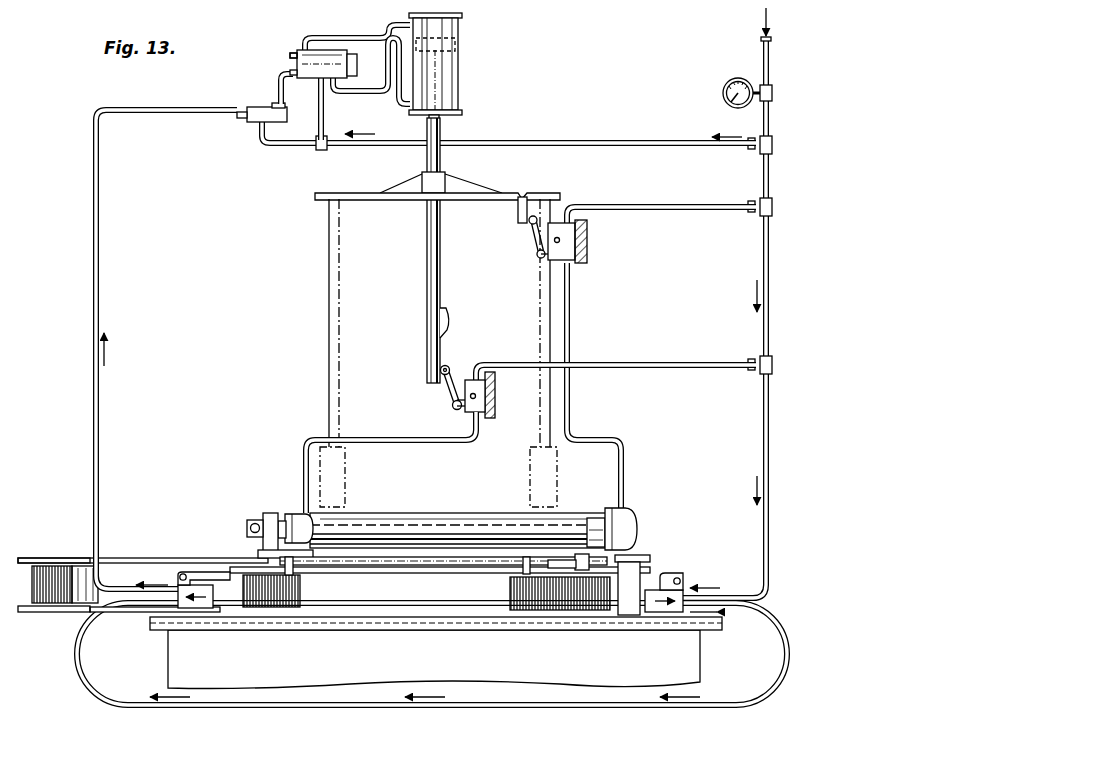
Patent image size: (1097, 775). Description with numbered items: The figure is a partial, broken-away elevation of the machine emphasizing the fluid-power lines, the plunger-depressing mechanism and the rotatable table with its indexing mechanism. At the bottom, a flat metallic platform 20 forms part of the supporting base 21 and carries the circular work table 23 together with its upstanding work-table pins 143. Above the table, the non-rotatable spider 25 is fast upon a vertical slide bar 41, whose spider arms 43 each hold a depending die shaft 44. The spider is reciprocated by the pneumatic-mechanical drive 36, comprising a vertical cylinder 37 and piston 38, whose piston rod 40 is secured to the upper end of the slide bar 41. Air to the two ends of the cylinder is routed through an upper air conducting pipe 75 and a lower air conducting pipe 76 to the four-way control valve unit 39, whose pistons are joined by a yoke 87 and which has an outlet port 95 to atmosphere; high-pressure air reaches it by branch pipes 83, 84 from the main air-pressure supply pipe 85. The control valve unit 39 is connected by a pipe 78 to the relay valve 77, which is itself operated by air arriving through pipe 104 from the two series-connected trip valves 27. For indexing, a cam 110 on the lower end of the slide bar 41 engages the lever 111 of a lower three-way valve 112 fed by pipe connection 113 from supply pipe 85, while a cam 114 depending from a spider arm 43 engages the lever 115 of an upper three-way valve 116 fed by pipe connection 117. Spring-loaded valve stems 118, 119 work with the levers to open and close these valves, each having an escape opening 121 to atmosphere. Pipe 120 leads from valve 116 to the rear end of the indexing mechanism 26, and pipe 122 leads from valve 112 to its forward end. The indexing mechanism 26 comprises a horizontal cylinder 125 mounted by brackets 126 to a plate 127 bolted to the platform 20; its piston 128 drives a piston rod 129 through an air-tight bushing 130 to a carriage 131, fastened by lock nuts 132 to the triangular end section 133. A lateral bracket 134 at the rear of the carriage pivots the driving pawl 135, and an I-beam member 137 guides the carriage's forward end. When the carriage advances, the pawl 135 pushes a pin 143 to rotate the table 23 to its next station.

The platform 20 is at (150, 620).
The supporting base 21 is at (168, 668).
The work table 23 is at (366, 608).
The spider 25 is at (481, 186).
The indexing mechanism 26 is at (460, 504).
The trip valves 27 is at (184, 573).
The pneumatic-mechanical drive 36 is at (463, 64).
The cylinder 37 is at (462, 95).
The piston 38 is at (460, 43).
The control valve unit 39 is at (311, 79).
The piston rod 40 is at (441, 118).
The slide bar 41 is at (426, 263).
The spider arms 43 is at (460, 196).
The die shafts 44 is at (338, 341).
The upper air conducting pipe 75 is at (391, 25).
The lower air conducting pipe 76 is at (396, 92).
The relay valve 77 is at (246, 108).
The pipe 78 is at (278, 86).
The branch pipe 83 is at (324, 106).
The branch pipe 84 is at (353, 147).
The main air-pressure supply pipe 85 is at (768, 120).
The yoke 87 is at (357, 72).
The outlet port 95 is at (290, 56).
The pipe 104 is at (99, 233).
The cam 110 is at (450, 322).
The lever 111 is at (447, 388).
The three-way valve 112 is at (487, 384).
The pipe connection 113 is at (617, 363).
The cam 114 is at (523, 196).
The lever 115 is at (528, 230).
The three-way valve 116 is at (577, 252).
The pipe connection 117 is at (677, 212).
The valve stem 118 is at (463, 373).
The valve stem 119 is at (533, 242).
The pipe 120 is at (571, 307).
The escape opening 121 is at (588, 232).
The pipe 122 is at (447, 444).
The cylinder 125 is at (449, 520).
The brackets 126 is at (318, 532).
The plate 127 is at (647, 561).
The piston 128 is at (590, 518).
The piston rod 129 is at (270, 513).
The bushing 130 is at (282, 520).
The carriage 131 is at (422, 566).
The lock nuts 132 is at (247, 525).
The end section 133 is at (263, 518).
The lateral bracket 134 is at (582, 572).
The driving pawl 135 is at (548, 572).
The I-beam member 137 is at (33, 557).
The work-table pins 143 is at (526, 557).